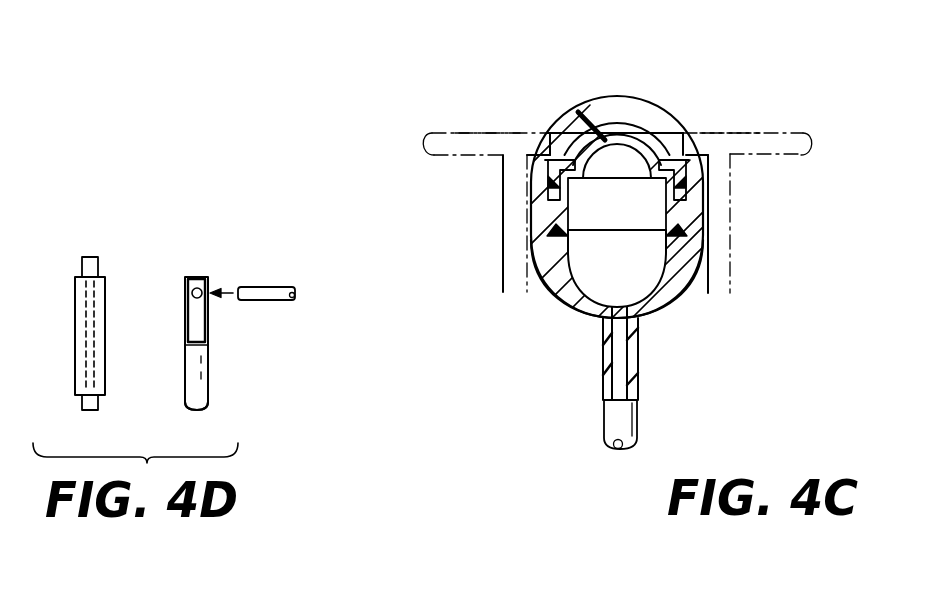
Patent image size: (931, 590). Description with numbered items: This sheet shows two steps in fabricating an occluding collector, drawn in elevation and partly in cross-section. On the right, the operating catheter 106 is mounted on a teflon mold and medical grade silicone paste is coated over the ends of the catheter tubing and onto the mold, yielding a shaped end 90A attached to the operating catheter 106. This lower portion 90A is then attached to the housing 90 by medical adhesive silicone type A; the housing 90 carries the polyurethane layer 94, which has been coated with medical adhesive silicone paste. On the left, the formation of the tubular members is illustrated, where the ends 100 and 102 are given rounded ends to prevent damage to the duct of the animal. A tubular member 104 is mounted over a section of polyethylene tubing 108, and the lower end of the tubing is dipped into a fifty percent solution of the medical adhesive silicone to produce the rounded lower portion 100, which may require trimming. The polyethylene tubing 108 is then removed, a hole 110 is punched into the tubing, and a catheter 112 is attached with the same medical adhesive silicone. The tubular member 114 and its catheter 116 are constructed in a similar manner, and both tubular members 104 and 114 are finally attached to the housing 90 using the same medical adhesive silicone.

In FIG. 4C, the housing 90 is at (630, 94).
In FIG. 4C, the shaped end 90A is at (670, 308).
In FIG. 4C, the polyurethane layer 94 is at (647, 127).
In FIG. 4C, the rounded lower portion 100 is at (425, 143).
In FIG. 4D, the rounded lower portion 100 is at (208, 405).
In FIG. 4C, the end 102 is at (806, 133).
In FIG. 4C, the tubular member 104 is at (477, 132).
In FIG. 4D, the tubular member 104 is at (104, 290).
In FIG. 4C, the operating catheter 106 is at (638, 408).
In FIG. 4D, the polyethylene tubing 108 is at (84, 257).
In FIG. 4D, the hole 110 is at (210, 278).
In FIG. 4C, the catheter 112 is at (500, 257).
In FIG. 4D, the catheter 112 is at (268, 287).
In FIG. 4C, the tubular member 114 is at (723, 131).
In FIG. 4C, the catheter 116 is at (733, 250).